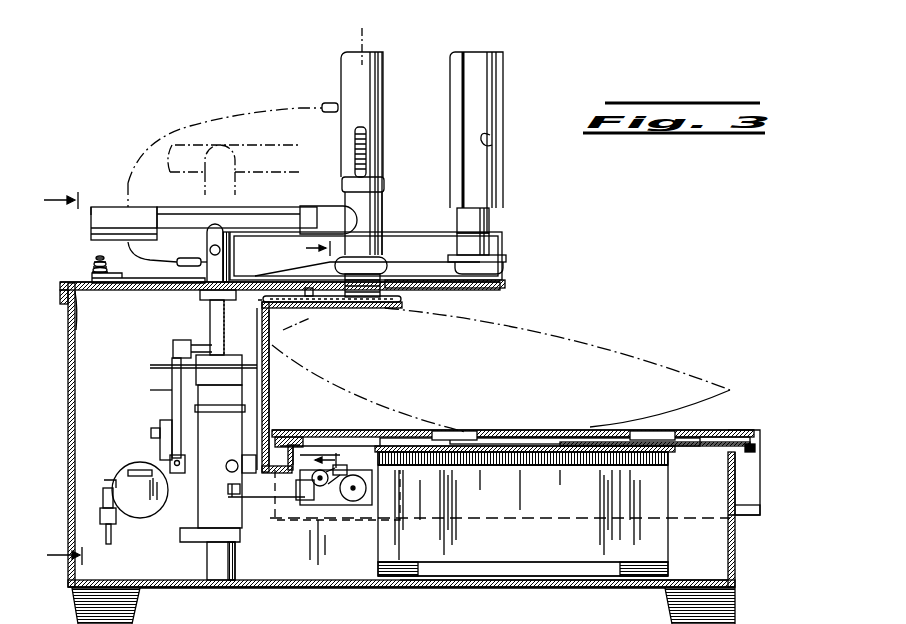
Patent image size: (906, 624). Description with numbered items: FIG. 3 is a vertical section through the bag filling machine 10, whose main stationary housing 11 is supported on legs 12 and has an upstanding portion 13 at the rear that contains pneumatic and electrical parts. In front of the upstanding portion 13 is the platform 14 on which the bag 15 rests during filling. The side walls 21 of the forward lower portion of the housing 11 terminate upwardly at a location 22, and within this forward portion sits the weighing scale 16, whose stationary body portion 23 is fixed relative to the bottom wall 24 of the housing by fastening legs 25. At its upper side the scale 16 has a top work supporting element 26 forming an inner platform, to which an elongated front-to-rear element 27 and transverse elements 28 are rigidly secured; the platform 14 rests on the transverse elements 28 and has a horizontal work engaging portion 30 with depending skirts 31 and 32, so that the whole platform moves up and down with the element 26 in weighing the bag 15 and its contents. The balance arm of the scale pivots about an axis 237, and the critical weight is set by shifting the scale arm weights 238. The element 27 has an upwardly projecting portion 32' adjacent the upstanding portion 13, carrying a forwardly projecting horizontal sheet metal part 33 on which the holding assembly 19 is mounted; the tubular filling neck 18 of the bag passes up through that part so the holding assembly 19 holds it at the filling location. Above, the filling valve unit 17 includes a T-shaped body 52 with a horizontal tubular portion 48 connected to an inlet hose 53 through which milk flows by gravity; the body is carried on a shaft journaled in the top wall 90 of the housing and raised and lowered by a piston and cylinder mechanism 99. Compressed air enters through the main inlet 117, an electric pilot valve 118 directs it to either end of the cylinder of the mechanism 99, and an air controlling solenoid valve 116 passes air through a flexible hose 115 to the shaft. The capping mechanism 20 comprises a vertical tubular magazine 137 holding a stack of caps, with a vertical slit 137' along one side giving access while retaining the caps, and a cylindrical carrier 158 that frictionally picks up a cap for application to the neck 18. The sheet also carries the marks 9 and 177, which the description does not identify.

The bag filling machine 10 is at (703, 293).
The section line 9- 9 is at (54, 382).
The main stationary housing 11 is at (217, 598).
The legs 12 is at (430, 606).
The upstanding portion 13 is at (66, 405).
The platform 14 is at (760, 435).
The bag 15 is at (605, 340).
The weighing scale 16 is at (494, 506).
The filling valve unit 17 is at (382, 225).
The inlet fitting or neck 18 is at (412, 293).
The holding assembly 19 is at (362, 304).
The capping mechanism 20 is at (505, 229).
The side walls 21 is at (735, 570).
The location 22 is at (752, 449).
The stationary body portion 23 is at (575, 565).
The bottom wall 24 is at (520, 587).
The fastening legs 25 is at (412, 575).
The top work supporting element 26 is at (538, 438).
The elongated element 27 is at (590, 442).
The transverse elements 28 is at (420, 431).
The horizontal work engaging portion 30 is at (740, 430).
The depending skirt 31 is at (762, 486).
The depending skirt 32 is at (769, 507).
The upwardly projecting portion 32' is at (285, 388).
The horizontal sheet metal part 33 is at (330, 309).
The horizontal tubular portion 48 is at (287, 207).
The T-shaped body 52 is at (383, 192).
The inlet hose 53 is at (106, 207).
The top wall 90 is at (70, 328).
The piston and cylinder mechanism 99 is at (230, 440).
The flexible hose 115 is at (148, 432).
The air controlling solenoid valve 116 is at (166, 446).
The main compressed air inlet 117 is at (100, 538).
The electric pilot valve 118 is at (142, 500).
The tubular magazine 137 is at (500, 130).
The vertical slit 137' is at (517, 134).
The carrier 158 is at (490, 246).
The axis line 177 is at (362, 29).
The axis 237 is at (460, 446).
The scale arm weights 238 is at (355, 500).